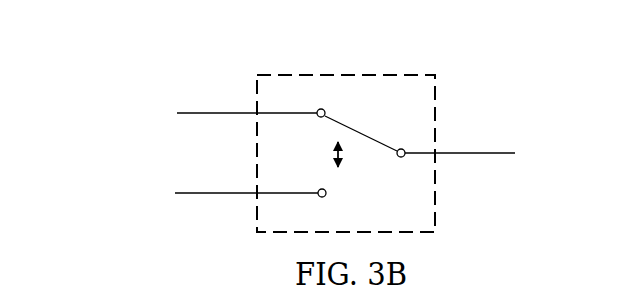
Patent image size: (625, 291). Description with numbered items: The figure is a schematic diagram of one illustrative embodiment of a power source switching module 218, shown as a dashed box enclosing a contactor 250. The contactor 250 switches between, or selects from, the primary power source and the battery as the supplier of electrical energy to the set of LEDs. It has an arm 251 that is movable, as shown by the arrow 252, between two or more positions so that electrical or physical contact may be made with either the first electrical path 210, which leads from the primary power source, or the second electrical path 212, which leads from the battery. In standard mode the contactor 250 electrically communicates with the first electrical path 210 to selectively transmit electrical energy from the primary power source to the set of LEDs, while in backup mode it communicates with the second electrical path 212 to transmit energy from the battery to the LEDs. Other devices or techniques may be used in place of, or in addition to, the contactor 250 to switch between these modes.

The power source switching module 218 is at (308, 69).
The first electrical path 210 is at (228, 112).
The second electrical path 212 is at (227, 198).
The contactor 250 is at (374, 181).
The arm 251 is at (356, 132).
The arrow 252 is at (333, 148).